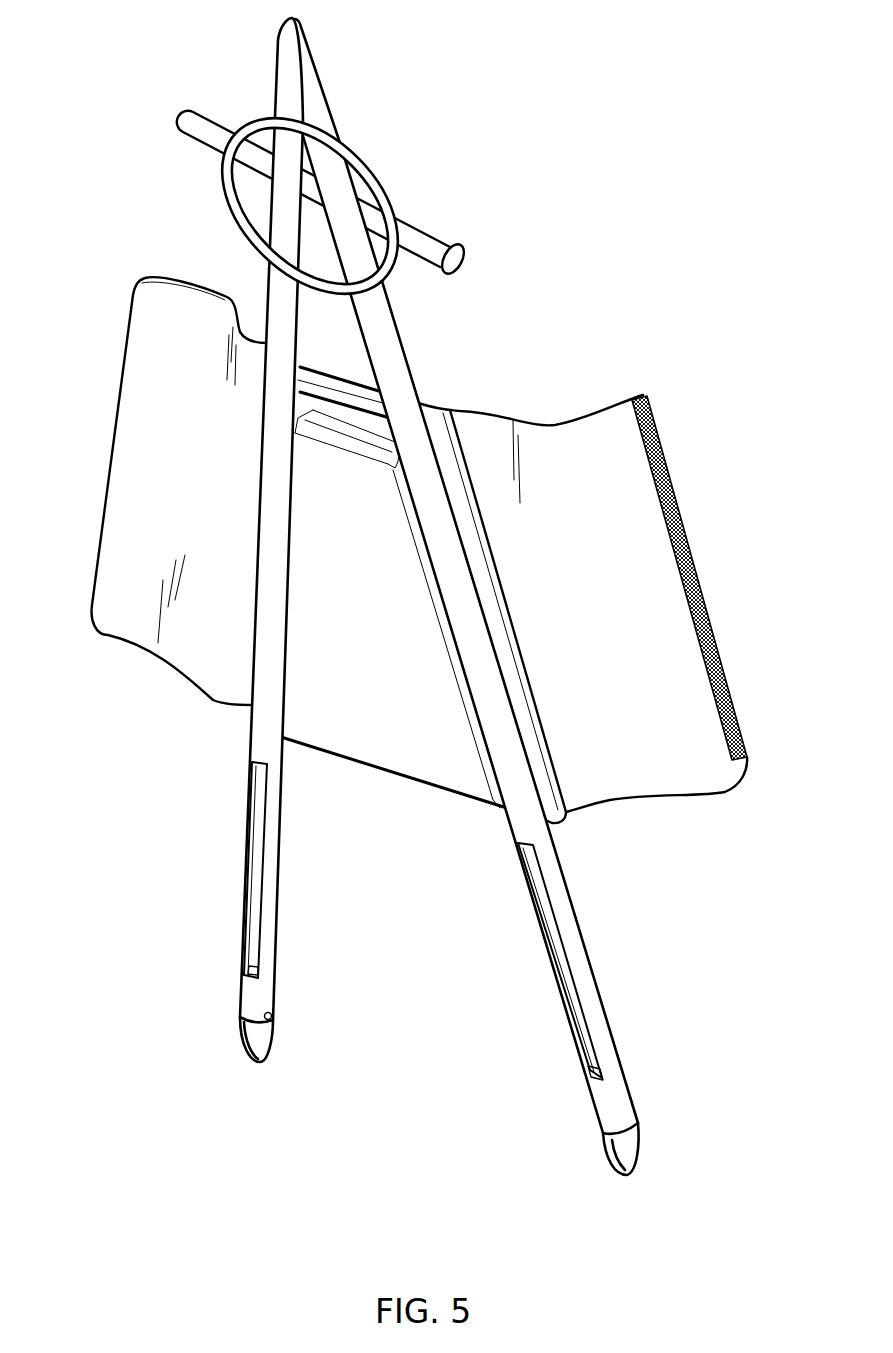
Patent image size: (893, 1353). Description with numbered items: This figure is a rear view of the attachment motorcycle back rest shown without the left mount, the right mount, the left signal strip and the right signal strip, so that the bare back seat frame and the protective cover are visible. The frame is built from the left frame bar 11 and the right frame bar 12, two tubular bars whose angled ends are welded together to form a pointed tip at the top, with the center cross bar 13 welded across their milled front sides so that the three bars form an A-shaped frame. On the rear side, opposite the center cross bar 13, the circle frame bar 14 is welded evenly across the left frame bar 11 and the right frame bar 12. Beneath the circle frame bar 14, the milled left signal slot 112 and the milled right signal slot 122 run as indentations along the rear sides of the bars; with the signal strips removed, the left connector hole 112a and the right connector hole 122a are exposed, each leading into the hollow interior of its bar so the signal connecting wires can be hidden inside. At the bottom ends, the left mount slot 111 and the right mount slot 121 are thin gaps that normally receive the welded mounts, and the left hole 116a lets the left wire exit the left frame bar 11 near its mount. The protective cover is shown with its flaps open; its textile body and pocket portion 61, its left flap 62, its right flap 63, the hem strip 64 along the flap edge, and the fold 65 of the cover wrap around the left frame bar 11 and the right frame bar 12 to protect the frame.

The left frame bar 11 is at (270, 637).
The right frame bar 12 is at (400, 378).
The center cross bar 13 is at (255, 116).
The circle frame bar 14 is at (230, 190).
The pocket portion of cloth 61 is at (348, 388).
The left flap of cloth 62 is at (318, 517).
The right flap of cloth 63 is at (660, 750).
The hem strip 64 is at (667, 468).
The fold of cloth 65 is at (155, 585).
The left mount slot 111 is at (248, 1057).
The milled left signal slot 112 is at (253, 908).
The left connector hole 112a is at (245, 971).
The left hole 116a is at (270, 1017).
The right mount slot 121 is at (630, 1177).
The milled right signal slot 122 is at (573, 1002).
The right connector hole 122a is at (587, 1072).